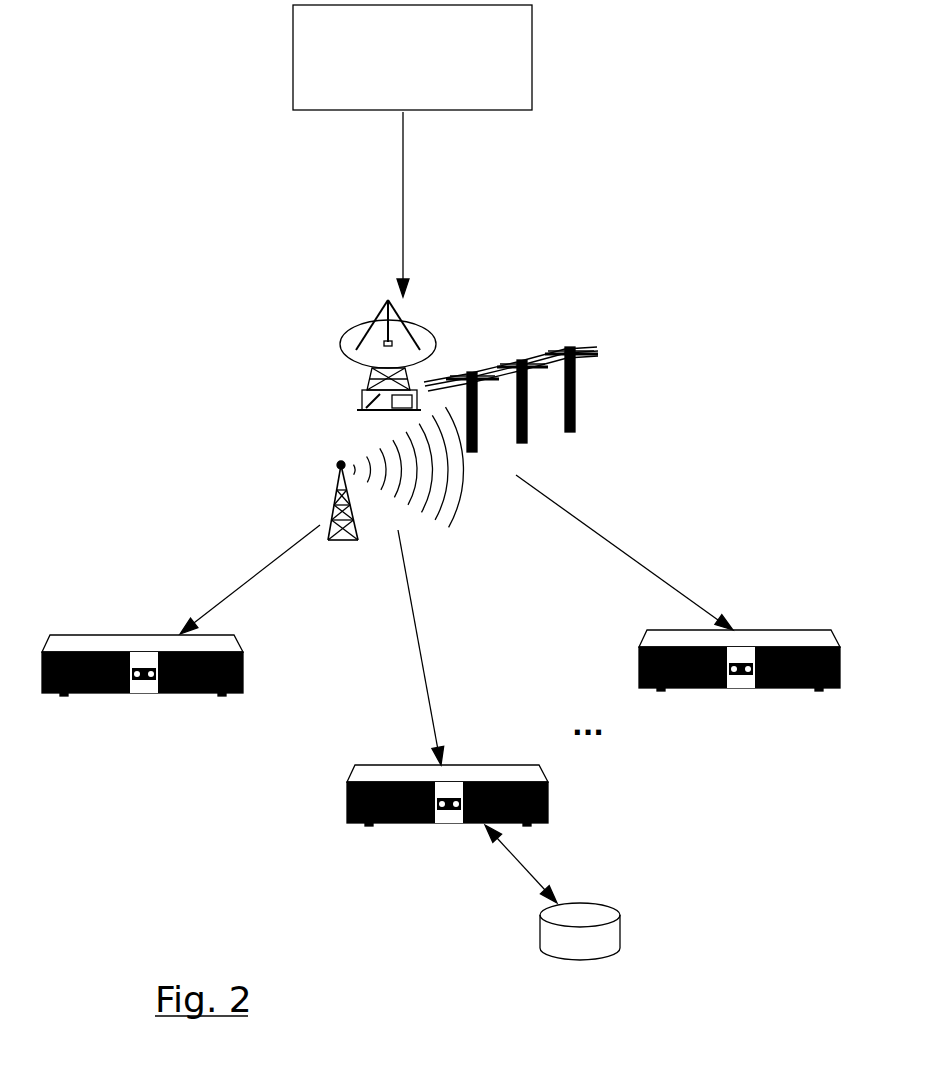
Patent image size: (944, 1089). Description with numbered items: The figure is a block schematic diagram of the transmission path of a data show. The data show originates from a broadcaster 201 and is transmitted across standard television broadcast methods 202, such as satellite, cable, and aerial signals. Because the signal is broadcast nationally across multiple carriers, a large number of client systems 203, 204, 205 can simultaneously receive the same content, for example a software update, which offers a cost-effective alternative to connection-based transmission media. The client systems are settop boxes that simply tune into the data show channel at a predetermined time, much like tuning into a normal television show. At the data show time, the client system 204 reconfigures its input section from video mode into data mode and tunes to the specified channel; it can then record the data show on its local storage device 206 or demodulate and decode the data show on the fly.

The broadcaster 201 is at (544, 61).
The standard television broadcast methods 202 is at (538, 330).
The client system 203 is at (143, 625).
The client system 204 is at (557, 802).
The client system 205 is at (766, 622).
The local storage device 206 is at (632, 931).